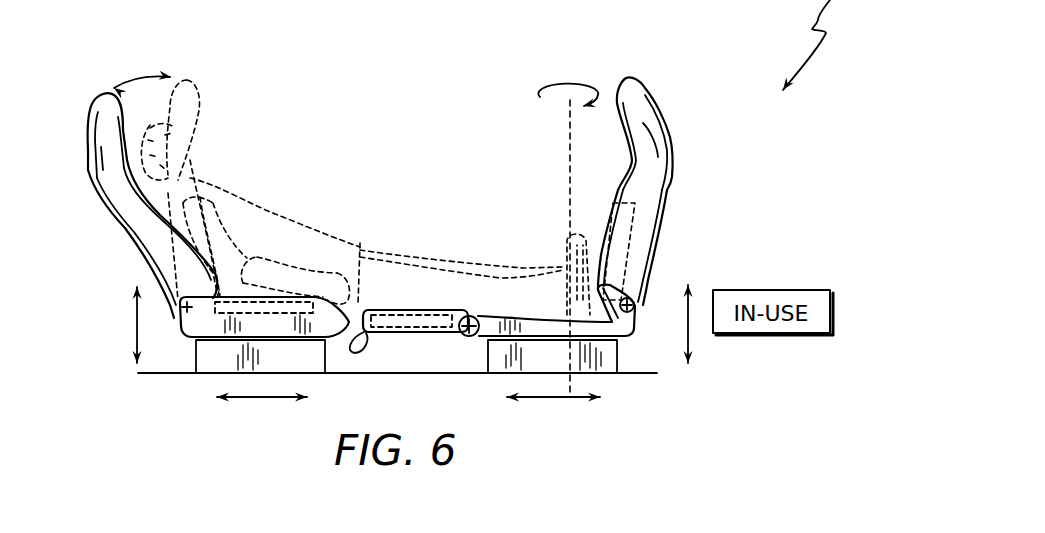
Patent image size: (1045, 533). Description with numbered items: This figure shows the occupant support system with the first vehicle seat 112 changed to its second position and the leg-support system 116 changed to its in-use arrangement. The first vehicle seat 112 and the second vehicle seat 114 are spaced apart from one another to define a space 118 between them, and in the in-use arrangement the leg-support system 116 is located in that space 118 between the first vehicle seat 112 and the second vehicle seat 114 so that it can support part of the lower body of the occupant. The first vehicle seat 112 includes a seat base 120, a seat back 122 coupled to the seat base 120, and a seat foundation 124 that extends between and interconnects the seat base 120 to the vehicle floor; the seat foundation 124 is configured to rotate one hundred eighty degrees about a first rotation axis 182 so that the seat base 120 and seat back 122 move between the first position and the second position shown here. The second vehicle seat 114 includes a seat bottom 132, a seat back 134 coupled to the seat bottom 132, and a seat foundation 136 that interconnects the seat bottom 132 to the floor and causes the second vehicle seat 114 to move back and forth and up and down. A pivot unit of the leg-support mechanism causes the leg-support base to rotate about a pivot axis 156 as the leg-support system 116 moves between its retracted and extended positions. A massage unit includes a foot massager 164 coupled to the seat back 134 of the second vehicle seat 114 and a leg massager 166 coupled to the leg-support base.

The first vehicle seat 112 is at (671, 110).
The second vehicle seat 114 is at (256, 137).
The leg-support system 116 is at (447, 250).
The space 118 is at (417, 252).
The seat base 120 is at (645, 314).
The seat back 122 is at (678, 157).
The seat foundation 124 is at (622, 363).
The seat bottom 132 is at (173, 282).
The seat back 134 is at (82, 151).
The seat foundation 136 is at (190, 358).
The pivot axis 156 is at (470, 335).
The foot massager 164 is at (653, 217).
The leg massager 166 is at (394, 330).
The first rotation axis 182 is at (563, 133).